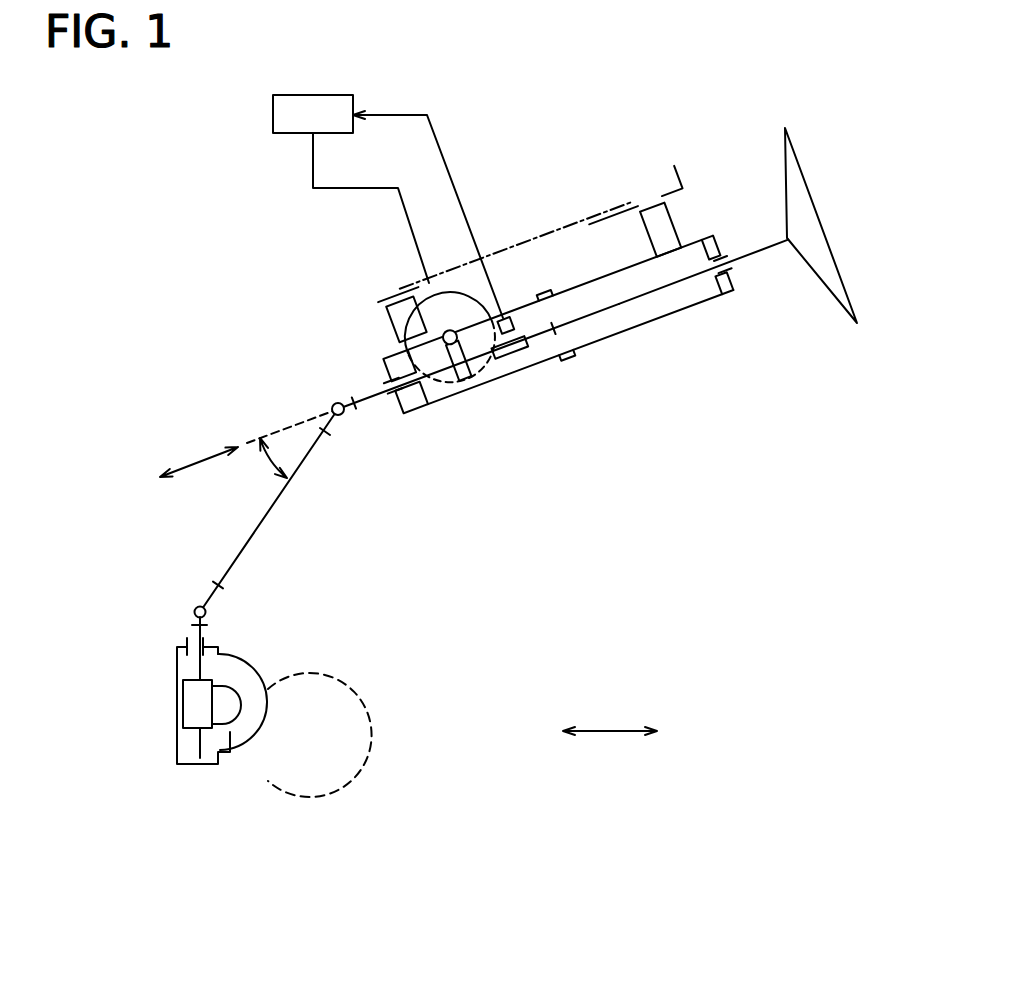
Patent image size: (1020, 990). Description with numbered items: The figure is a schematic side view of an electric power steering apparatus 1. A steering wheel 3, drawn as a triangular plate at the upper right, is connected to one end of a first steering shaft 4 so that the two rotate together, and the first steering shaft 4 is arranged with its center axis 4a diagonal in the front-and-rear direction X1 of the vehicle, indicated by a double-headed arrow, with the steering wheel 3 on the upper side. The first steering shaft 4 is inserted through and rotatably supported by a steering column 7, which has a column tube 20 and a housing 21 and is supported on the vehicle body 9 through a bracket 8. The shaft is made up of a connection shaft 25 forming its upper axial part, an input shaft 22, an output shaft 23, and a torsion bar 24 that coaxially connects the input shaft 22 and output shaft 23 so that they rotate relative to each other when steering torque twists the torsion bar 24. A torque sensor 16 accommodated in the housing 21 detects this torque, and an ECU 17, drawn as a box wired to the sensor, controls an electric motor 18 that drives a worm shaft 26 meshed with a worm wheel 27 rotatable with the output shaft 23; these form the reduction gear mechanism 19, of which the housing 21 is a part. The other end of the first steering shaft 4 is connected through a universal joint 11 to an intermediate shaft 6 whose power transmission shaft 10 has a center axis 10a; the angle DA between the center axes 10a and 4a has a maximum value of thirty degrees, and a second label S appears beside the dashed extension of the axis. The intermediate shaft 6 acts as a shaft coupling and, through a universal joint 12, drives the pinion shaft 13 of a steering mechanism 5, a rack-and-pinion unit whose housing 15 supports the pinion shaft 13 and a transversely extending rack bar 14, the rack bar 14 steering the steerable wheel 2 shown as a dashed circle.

The electric power steering apparatus 1 is at (248, 311).
The steerable wheel 2 is at (370, 795).
The steering wheel 3 is at (833, 296).
The first steering shaft 4 is at (625, 315).
The center axis 4a is at (574, 361).
The steering mechanism 5 is at (145, 666).
The intermediate shaft 6 is at (138, 491).
The steering column 7 is at (588, 268).
The bracket 8 is at (645, 230).
The vehicle body 9 is at (664, 192).
The power transmission shaft 10 is at (225, 552).
The center axis 10a is at (228, 580).
The universal joint 11 is at (334, 404).
The universal joint 12 is at (195, 608).
The pinion shaft 13 is at (193, 627).
The rack bar 14 is at (235, 752).
The housing 15 is at (177, 735).
The torque sensor 16 is at (512, 312).
The ECU 17 is at (273, 117).
The electric motor 18 is at (399, 281).
The reduction gear mechanism 19 is at (431, 421).
The column tube 20 is at (720, 296).
The housing 21 is at (540, 350).
The input shaft 22 is at (533, 297).
The output shaft 23 is at (405, 402).
The torsion bar 24 is at (522, 353).
The connection shaft 25 is at (683, 300).
The worm shaft 26 is at (432, 275).
The worm wheel 27 is at (477, 372).
The stroke S is at (197, 460).
The angle DA is at (272, 461).
The front-and-rear direction X1 is at (609, 733).